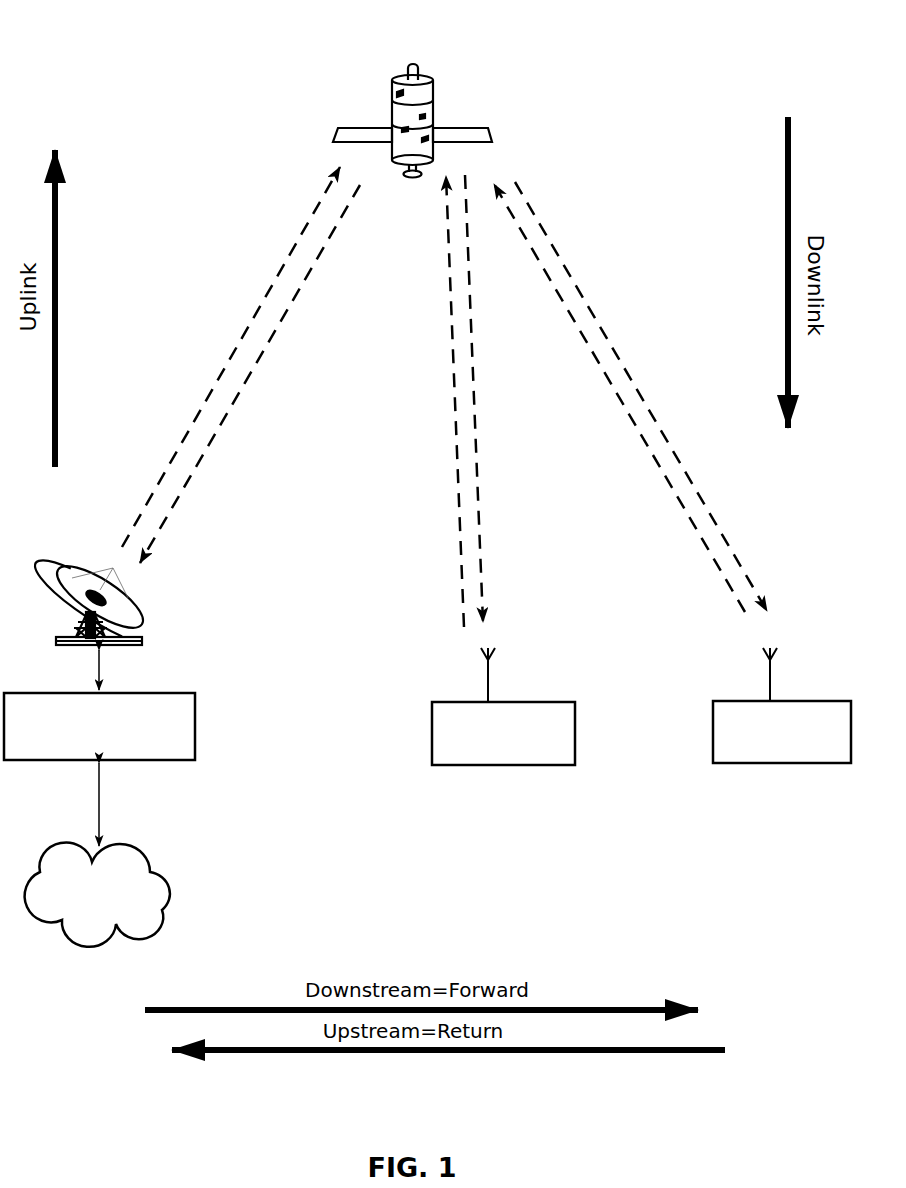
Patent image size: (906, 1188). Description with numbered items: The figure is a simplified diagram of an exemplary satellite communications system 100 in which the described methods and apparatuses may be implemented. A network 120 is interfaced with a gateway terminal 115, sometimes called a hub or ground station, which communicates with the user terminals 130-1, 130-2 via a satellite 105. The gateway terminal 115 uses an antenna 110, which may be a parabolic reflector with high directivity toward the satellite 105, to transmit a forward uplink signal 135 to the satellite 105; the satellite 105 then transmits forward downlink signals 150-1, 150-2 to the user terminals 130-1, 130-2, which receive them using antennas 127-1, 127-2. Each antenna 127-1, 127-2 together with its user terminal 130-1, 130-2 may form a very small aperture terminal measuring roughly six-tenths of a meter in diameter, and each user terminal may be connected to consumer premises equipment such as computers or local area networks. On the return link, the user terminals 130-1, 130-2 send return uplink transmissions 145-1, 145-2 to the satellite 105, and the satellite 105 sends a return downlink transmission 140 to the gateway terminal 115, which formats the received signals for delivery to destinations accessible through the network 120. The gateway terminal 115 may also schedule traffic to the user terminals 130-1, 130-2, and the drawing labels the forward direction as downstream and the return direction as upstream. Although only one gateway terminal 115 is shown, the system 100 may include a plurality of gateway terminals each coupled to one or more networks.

The satellite communications system 100 is at (592, 126).
The satellite 105 is at (413, 63).
The antenna 110 is at (141, 620).
The gateway terminal 115 is at (195, 725).
The network 120 is at (178, 888).
The antenna 127-1 is at (434, 645).
The antenna 127-2 is at (716, 652).
The user terminal 130-1 is at (432, 731).
The user terminal 130-2 is at (713, 731).
The forward uplink signal 135 is at (230, 360).
The return downlink transmission 140 is at (295, 297).
The return uplink transmission 145-1 is at (455, 410).
The return uplink transmission 145-2 is at (620, 405).
The forward downlink signal 150-1 is at (480, 508).
The forward downlink signal 150-2 is at (580, 290).